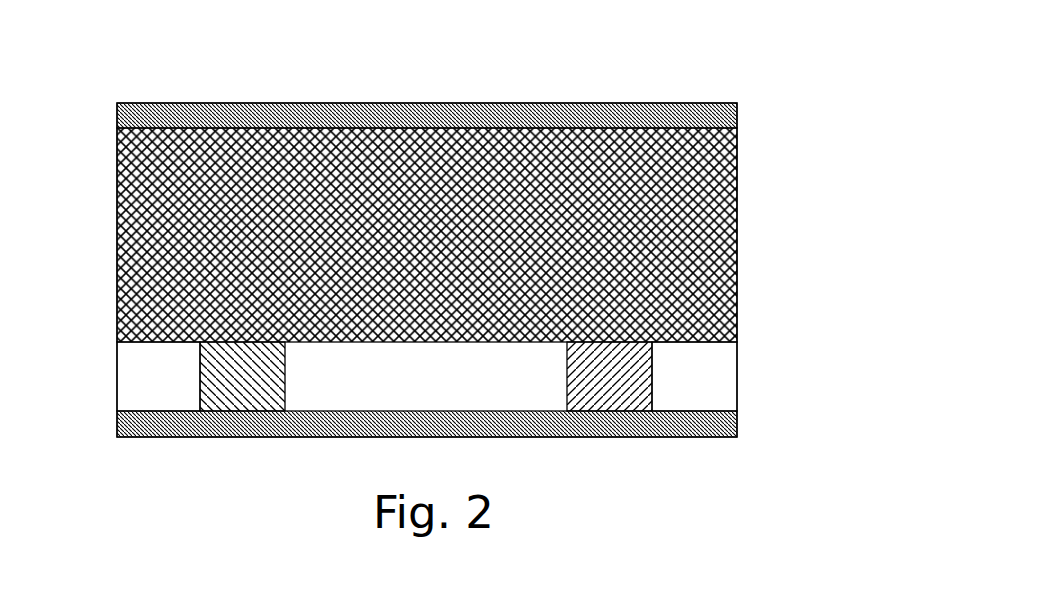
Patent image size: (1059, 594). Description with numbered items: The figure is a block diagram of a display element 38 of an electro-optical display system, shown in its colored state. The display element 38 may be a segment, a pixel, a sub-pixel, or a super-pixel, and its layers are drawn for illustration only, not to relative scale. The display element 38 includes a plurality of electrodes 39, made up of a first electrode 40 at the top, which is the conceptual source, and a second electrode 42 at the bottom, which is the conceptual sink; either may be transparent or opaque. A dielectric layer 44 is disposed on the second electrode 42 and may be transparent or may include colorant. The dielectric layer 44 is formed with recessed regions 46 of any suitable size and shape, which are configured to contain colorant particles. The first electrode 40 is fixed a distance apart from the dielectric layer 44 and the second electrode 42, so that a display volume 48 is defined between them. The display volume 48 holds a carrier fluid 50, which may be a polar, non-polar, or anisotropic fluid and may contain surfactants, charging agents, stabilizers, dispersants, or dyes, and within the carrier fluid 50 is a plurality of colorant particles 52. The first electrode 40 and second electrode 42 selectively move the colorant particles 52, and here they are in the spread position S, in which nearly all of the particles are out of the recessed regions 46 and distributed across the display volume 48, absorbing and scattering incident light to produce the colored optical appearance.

The display element 38 is at (848, 75).
The plurality of electrodes 39 is at (173, 102).
The first electrode 40 is at (662, 104).
The second electrode 42 is at (628, 440).
The dielectric layer 44 is at (737, 388).
The recessed regions 46 is at (652, 362).
The display volume 48 is at (738, 160).
The carrier fluid 50 is at (738, 222).
The colorant particles 52 is at (738, 292).
The spread position S is at (118, 233).